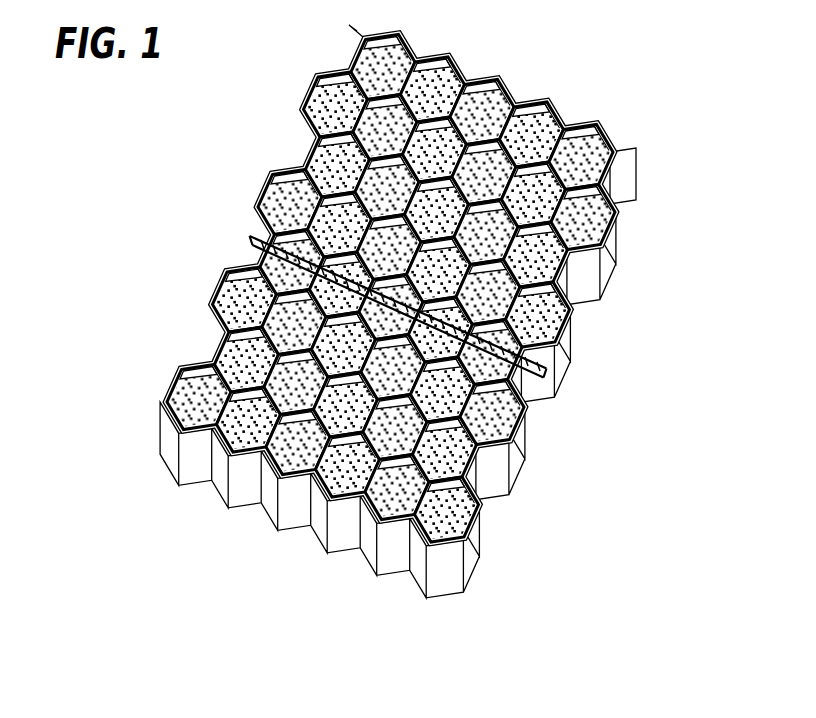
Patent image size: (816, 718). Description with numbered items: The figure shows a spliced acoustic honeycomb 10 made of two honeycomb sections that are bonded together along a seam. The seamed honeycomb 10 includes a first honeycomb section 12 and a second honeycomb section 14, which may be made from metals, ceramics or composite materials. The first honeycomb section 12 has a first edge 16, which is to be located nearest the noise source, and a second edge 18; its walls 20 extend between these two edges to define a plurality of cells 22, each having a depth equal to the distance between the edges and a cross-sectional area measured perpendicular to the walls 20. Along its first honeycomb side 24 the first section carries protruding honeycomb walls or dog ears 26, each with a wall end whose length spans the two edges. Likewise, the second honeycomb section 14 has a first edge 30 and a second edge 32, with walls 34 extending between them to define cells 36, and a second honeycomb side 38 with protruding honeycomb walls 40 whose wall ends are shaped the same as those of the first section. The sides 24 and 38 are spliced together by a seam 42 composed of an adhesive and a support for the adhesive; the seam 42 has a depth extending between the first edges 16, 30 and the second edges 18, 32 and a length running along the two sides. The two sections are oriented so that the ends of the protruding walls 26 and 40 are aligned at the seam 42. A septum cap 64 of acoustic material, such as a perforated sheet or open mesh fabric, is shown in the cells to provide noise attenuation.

The spliced acoustic honeycomb 10 is at (600, 48).
The first honeycomb section 12 is at (634, 190).
The second honeycomb section 14 is at (455, 565).
The first edge 16 is at (287, 228).
The second edge 18 is at (580, 285).
The walls 20 is at (312, 150).
The cells 22 is at (417, 65).
The first honeycomb side 24 is at (540, 365).
The protruding honeycomb walls 26 is at (262, 243).
The first edge 30 is at (173, 410).
The second edge 32 is at (177, 462).
The walls 34 is at (458, 428).
The cells 36 is at (483, 497).
The second honeycomb side 38 is at (478, 410).
The protruding honeycomb walls 40 is at (248, 240).
The seam 42 is at (455, 312).
The septum cap 64 is at (325, 456).